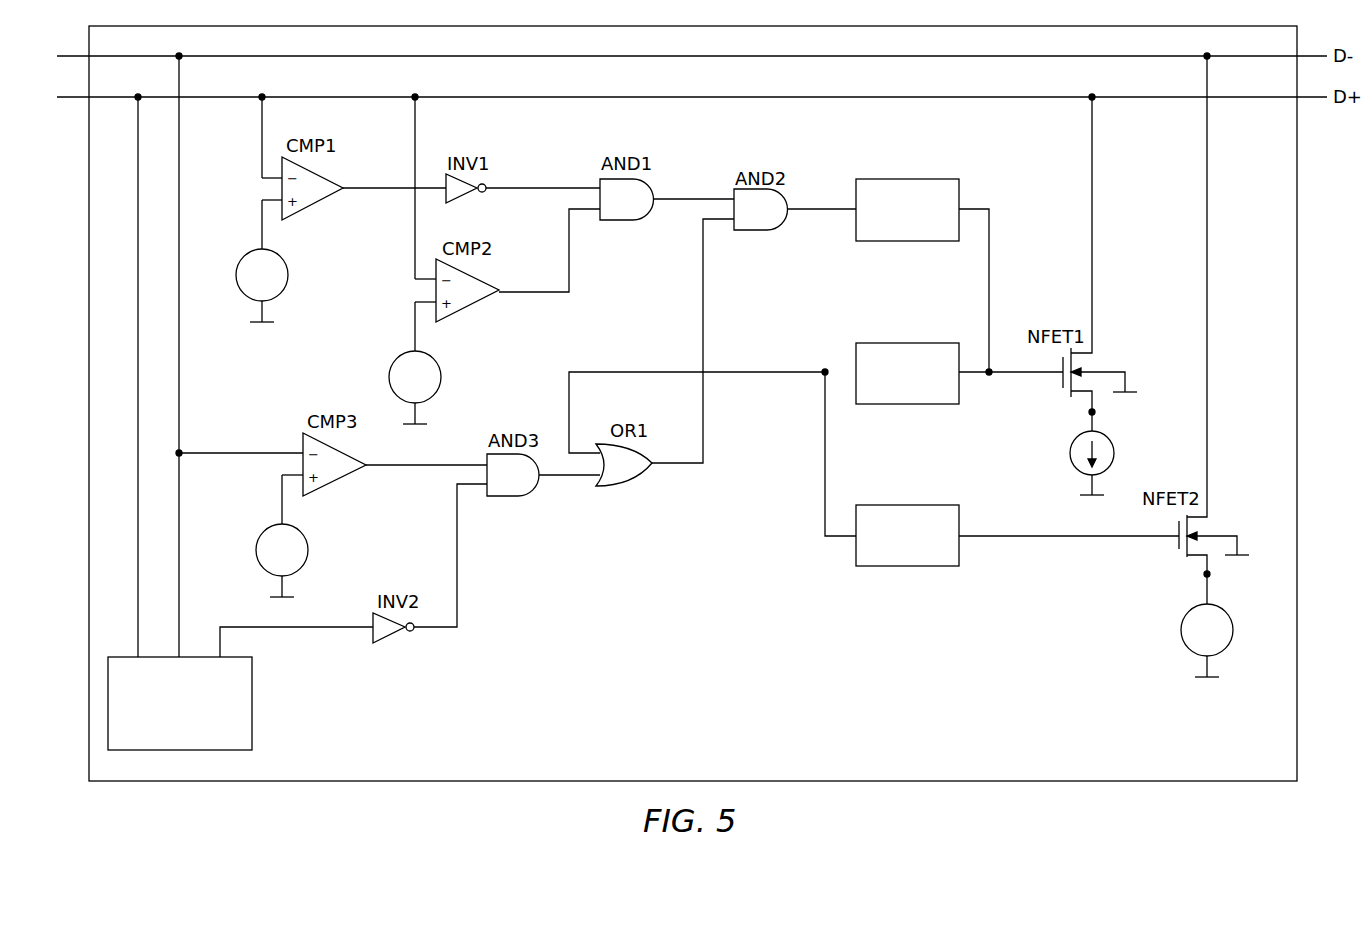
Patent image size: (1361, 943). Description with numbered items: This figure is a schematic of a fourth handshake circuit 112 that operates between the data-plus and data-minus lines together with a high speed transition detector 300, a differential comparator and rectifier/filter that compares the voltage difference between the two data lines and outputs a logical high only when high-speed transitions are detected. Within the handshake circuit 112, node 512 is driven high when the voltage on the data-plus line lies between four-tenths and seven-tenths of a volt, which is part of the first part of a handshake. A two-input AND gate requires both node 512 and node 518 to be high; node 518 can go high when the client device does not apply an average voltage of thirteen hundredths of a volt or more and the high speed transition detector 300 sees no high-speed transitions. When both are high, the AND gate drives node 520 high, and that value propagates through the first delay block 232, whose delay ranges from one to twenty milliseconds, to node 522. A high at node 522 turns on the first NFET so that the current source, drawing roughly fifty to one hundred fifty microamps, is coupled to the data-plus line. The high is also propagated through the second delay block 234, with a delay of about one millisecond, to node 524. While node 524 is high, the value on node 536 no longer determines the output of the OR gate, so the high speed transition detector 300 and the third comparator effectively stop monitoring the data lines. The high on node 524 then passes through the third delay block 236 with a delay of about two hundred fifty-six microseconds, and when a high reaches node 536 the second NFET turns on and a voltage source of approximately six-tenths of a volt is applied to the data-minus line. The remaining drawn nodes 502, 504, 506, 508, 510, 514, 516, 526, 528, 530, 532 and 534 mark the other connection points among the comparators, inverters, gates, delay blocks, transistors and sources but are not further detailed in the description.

The handshake circuit 112 is at (992, 786).
The delay block1 232 is at (912, 179).
The delay block2 234 is at (908, 404).
The delay block3 236 is at (908, 566).
The high speed transition detector 300 is at (252, 700).
The CMP1 reference input node (VS1) 502 is at (262, 222).
The CMP2 reference input node (VS2) 504 is at (415, 327).
The CMP1 output 506 is at (378, 189).
The CMP2 output 508 is at (518, 292).
The INV1 output 510 is at (535, 188).
The node 512 is at (678, 199).
The CMP3 reference input node (VS3) 514 is at (282, 499).
The CMP3 output 516 is at (395, 468).
The node 518 is at (672, 465).
The node 520 is at (805, 210).
The node 522 is at (989, 252).
The node 524 is at (640, 372).
The delay block 3 output 526 is at (1030, 537).
The NFET1 source node (IS1) 528 is at (1085, 414).
The NFET2 source node (VS4) 530 is at (1200, 576).
The INV2 input 532 is at (335, 630).
The INV2 output 534 is at (437, 630).
The node 536 is at (565, 477).